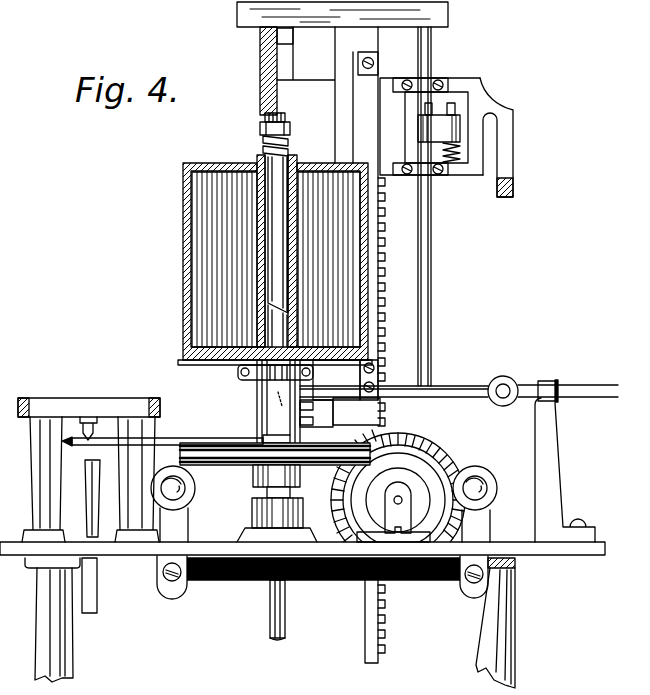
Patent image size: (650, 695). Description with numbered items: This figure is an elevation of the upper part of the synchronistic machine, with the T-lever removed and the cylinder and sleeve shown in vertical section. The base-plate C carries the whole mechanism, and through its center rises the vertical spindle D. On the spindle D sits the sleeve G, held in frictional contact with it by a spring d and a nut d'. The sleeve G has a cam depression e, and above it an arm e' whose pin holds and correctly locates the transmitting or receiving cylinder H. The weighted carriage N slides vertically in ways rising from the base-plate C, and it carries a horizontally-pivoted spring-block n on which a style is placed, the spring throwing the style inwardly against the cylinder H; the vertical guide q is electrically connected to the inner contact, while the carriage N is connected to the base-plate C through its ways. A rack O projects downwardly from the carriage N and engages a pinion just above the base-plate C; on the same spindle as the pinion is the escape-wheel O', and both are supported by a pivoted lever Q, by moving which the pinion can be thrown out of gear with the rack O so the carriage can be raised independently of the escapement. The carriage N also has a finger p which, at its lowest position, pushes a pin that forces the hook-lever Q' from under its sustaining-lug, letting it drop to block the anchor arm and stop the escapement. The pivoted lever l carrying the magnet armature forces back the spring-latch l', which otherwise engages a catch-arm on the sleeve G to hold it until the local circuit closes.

The vertical guide q is at (356, 118).
The vertical spindle D is at (290, 146).
The nut d' is at (280, 108).
The spring d is at (289, 122).
The sleeve G is at (262, 150).
The cylinder H is at (183, 243).
The arm e' is at (275, 372).
The weighted carriage N is at (455, 80).
The spring-block n is at (439, 132).
The finger p is at (511, 160).
The rack O is at (385, 420).
The hook-lever Q' is at (459, 386).
The cam depression e is at (316, 413).
The pivoted lever Q is at (398, 498).
The escape-wheel O' is at (472, 485).
The pivoted lever l is at (89, 540).
The spring-latch l' is at (81, 477).
The base-plate C is at (606, 547).